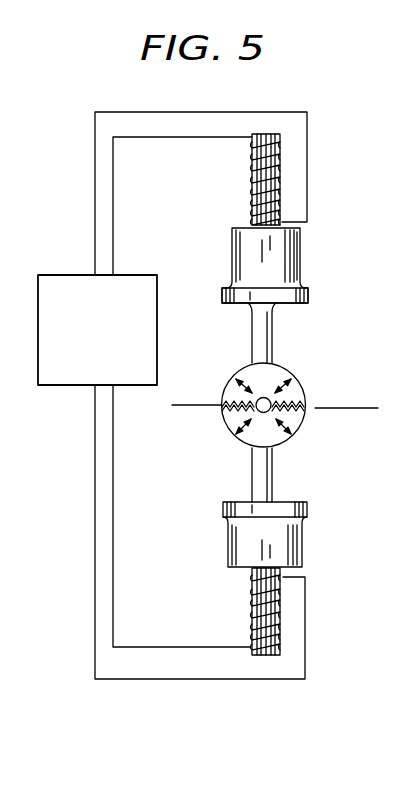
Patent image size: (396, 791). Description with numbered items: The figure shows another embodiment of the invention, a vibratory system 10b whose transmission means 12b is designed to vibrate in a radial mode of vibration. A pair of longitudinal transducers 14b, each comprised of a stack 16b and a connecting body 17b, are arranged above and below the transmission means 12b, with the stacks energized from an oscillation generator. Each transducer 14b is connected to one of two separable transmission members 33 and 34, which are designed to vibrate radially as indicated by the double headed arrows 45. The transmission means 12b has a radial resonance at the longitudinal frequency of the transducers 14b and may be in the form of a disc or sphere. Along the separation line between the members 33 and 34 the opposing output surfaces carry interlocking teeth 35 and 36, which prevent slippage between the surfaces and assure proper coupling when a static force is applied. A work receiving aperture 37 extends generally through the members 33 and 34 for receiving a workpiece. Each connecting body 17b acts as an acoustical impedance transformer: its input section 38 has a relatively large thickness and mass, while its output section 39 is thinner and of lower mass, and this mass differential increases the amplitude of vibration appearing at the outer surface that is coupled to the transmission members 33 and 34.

The vibratory system 10b is at (309, 211).
The transmission means 12b is at (293, 452).
The longitudinal transducer 14b is at (248, 178).
The stack 16b is at (283, 148).
The connecting body 17b is at (222, 296).
The transmission member 33 is at (252, 372).
The transmission member 34 is at (297, 423).
The interlocking teeth 35 is at (222, 408).
The interlocking teeth 36 is at (240, 418).
The work receiving aperture 37 is at (267, 403).
The input section 38 is at (288, 253).
The output section 39 is at (272, 330).
The double headed arrows 45 is at (243, 432).